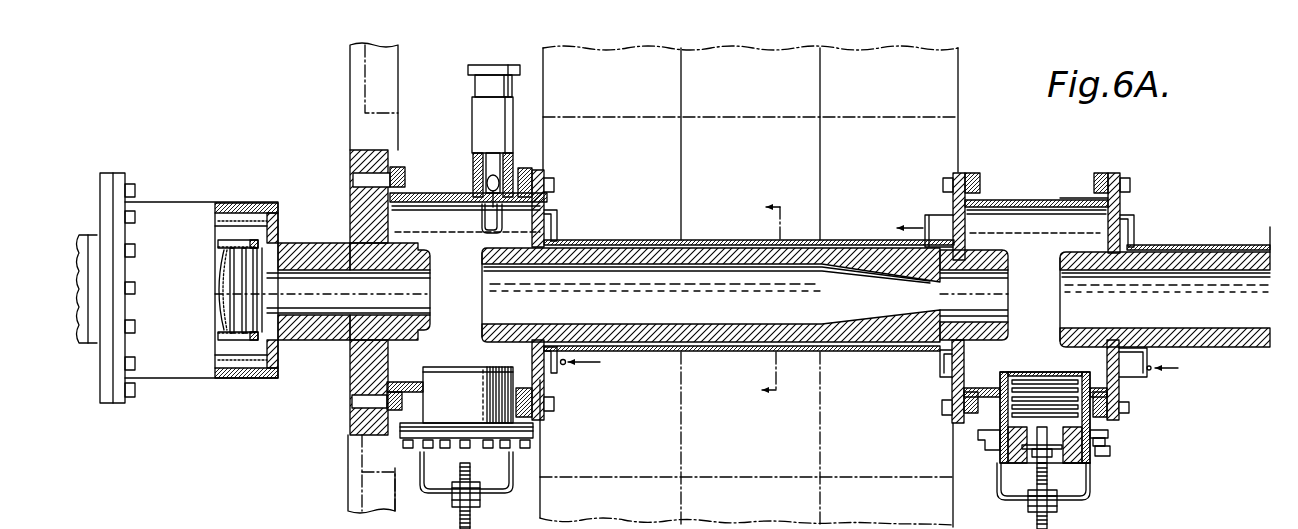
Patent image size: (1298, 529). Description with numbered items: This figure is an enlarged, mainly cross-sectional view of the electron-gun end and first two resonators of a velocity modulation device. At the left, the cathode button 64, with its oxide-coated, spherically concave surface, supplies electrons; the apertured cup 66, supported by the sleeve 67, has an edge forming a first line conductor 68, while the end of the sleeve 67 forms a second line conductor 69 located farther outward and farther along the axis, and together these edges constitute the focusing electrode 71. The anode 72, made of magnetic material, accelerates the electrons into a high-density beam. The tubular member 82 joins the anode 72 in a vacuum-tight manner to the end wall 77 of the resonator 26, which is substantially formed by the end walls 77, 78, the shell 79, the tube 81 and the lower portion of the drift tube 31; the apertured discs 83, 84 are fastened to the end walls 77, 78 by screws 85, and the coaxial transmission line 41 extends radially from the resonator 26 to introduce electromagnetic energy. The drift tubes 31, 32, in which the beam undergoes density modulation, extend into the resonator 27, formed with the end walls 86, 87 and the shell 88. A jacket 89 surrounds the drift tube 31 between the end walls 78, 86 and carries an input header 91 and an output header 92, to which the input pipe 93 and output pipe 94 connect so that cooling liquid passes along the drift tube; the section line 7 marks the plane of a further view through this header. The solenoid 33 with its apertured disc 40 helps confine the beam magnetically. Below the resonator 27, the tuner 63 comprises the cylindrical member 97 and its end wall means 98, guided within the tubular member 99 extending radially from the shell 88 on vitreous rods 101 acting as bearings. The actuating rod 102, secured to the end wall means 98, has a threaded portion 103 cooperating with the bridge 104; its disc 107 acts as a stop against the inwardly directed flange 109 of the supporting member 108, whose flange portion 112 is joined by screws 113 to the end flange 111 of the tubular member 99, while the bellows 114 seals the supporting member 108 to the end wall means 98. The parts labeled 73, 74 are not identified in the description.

The section line 7 is at (773, 299).
The resonator 26 is at (440, 183).
The resonator 27 is at (1008, 225).
The drift tube 31 is at (722, 247).
The drift tube 32 is at (1202, 252).
The solenoid 33 is at (366, 496).
The apertured disc 40 is at (347, 457).
The coaxial transmission line 41 is at (474, 115).
The tuner 63 is at (420, 462).
The cathode button 64 is at (222, 304).
The apertured cup 66 is at (226, 327).
The sleeve 67 is at (224, 238).
The first line conductor 68 is at (230, 257).
The second line conductor 69 is at (253, 248).
The focusing electrode 71 is at (262, 340).
The anode 72 is at (278, 240).
The shaft 73 is at (340, 291).
The hub 74 is at (990, 295).
The end wall 77 is at (352, 196).
The end wall 78 is at (545, 197).
The shell 79 is at (400, 382).
The tube 81 is at (433, 324).
The tubular member 82 is at (316, 333).
The apertured disc 83 is at (403, 167).
The apertured disc 84 is at (523, 168).
The screws 85 is at (352, 405).
The end wall 86 is at (951, 211).
The end wall 87 is at (1125, 210).
The shell 88 is at (1081, 198).
The jacket 89 is at (723, 352).
The input header 91 is at (554, 376).
The output header 92 is at (940, 370).
The input pipe 93 is at (578, 365).
The output pipe 94 is at (923, 218).
The cylindrical member 97 is at (1081, 372).
The end wall means 98 is at (1050, 372).
The tubular member 99 is at (1000, 414).
The vitreous rods 101 is at (1088, 374).
The actuating rod 102 is at (460, 525).
The threaded portion 103 is at (1030, 498).
The bridge 104 is at (1060, 498).
The disc 107 is at (1033, 478).
The supporting member 108 is at (1077, 467).
The inwardly directed flange 109 is at (998, 452).
The end flange 111 is at (1110, 428).
The flange portion 112 is at (1107, 445).
The screws 113 is at (1106, 455).
The bellows 114 is at (1015, 373).